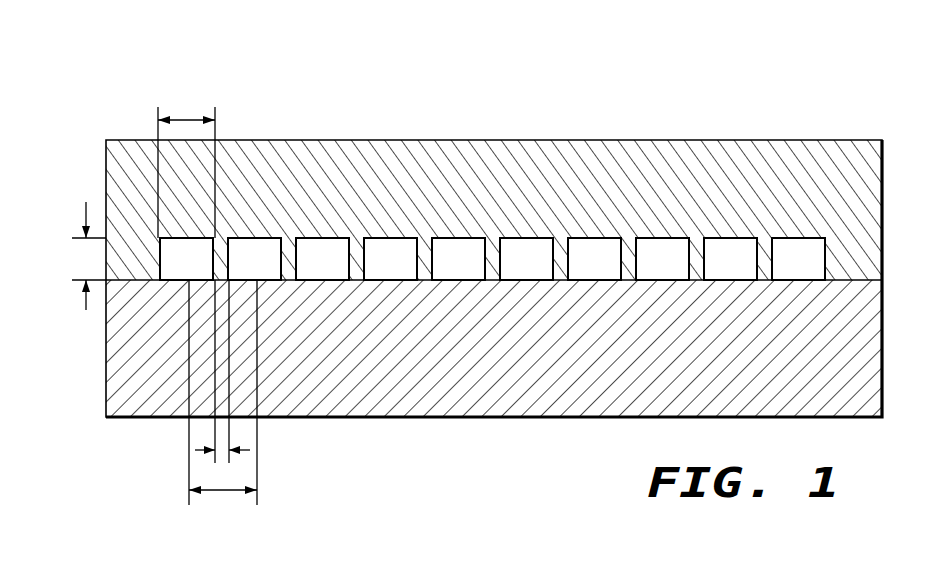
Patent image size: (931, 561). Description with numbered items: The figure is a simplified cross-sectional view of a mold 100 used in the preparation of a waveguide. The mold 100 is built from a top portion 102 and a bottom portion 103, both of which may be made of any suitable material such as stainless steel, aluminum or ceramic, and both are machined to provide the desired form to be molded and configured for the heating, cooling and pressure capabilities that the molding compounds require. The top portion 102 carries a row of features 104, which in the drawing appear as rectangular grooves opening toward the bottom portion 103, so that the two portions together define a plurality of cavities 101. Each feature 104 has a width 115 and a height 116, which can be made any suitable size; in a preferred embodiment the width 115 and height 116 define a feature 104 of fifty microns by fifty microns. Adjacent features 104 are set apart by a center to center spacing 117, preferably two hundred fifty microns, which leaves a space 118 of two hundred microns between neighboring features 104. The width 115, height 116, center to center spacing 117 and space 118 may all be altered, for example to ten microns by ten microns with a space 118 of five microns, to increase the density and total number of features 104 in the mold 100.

The mold 100 is at (452, 278).
The cavities 101 is at (204, 272).
The top portion 102 is at (530, 139).
The bottom portion 103 is at (445, 418).
The features 104 is at (795, 238).
The width 115 is at (185, 112).
The height 116 is at (87, 258).
The center to center spacing 117 is at (222, 497).
The space 118 is at (220, 462).